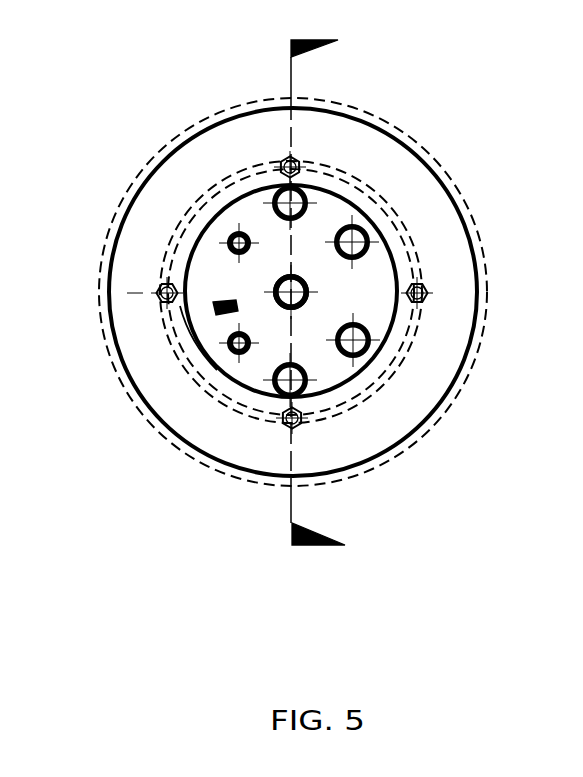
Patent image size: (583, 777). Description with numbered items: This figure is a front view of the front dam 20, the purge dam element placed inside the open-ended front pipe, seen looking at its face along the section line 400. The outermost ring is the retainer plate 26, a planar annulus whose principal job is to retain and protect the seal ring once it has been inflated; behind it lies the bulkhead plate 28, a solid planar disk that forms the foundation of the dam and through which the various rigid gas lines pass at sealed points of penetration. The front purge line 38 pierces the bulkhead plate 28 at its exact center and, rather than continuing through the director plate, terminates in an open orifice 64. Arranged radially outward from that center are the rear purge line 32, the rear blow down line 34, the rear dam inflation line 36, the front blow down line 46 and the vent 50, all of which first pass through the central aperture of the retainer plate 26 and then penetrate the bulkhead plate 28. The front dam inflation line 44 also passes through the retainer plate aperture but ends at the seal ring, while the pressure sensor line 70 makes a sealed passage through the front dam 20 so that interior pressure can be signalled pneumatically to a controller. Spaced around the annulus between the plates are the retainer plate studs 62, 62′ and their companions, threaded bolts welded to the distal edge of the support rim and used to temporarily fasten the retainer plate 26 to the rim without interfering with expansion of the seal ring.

The front dam 20 is at (108, 183).
The retainer plate 26 is at (448, 273).
The bulkhead plate 28 is at (203, 232).
The rear purge line 32 is at (420, 196).
The rear blow down line 34 is at (424, 368).
The rear dam inflation line 36 is at (185, 400).
The front purge line 38 is at (407, 266).
The front dam inflation line 44 is at (213, 304).
The front blow down line 46 is at (367, 425).
The vent 50 is at (383, 147).
The retainer plate stud 62 is at (427, 298).
The retainer plate stud 62′ is at (284, 158).
The open orifice 64 is at (274, 285).
The pressure sensor line 70 is at (236, 232).
The section line 400 is at (346, 293).